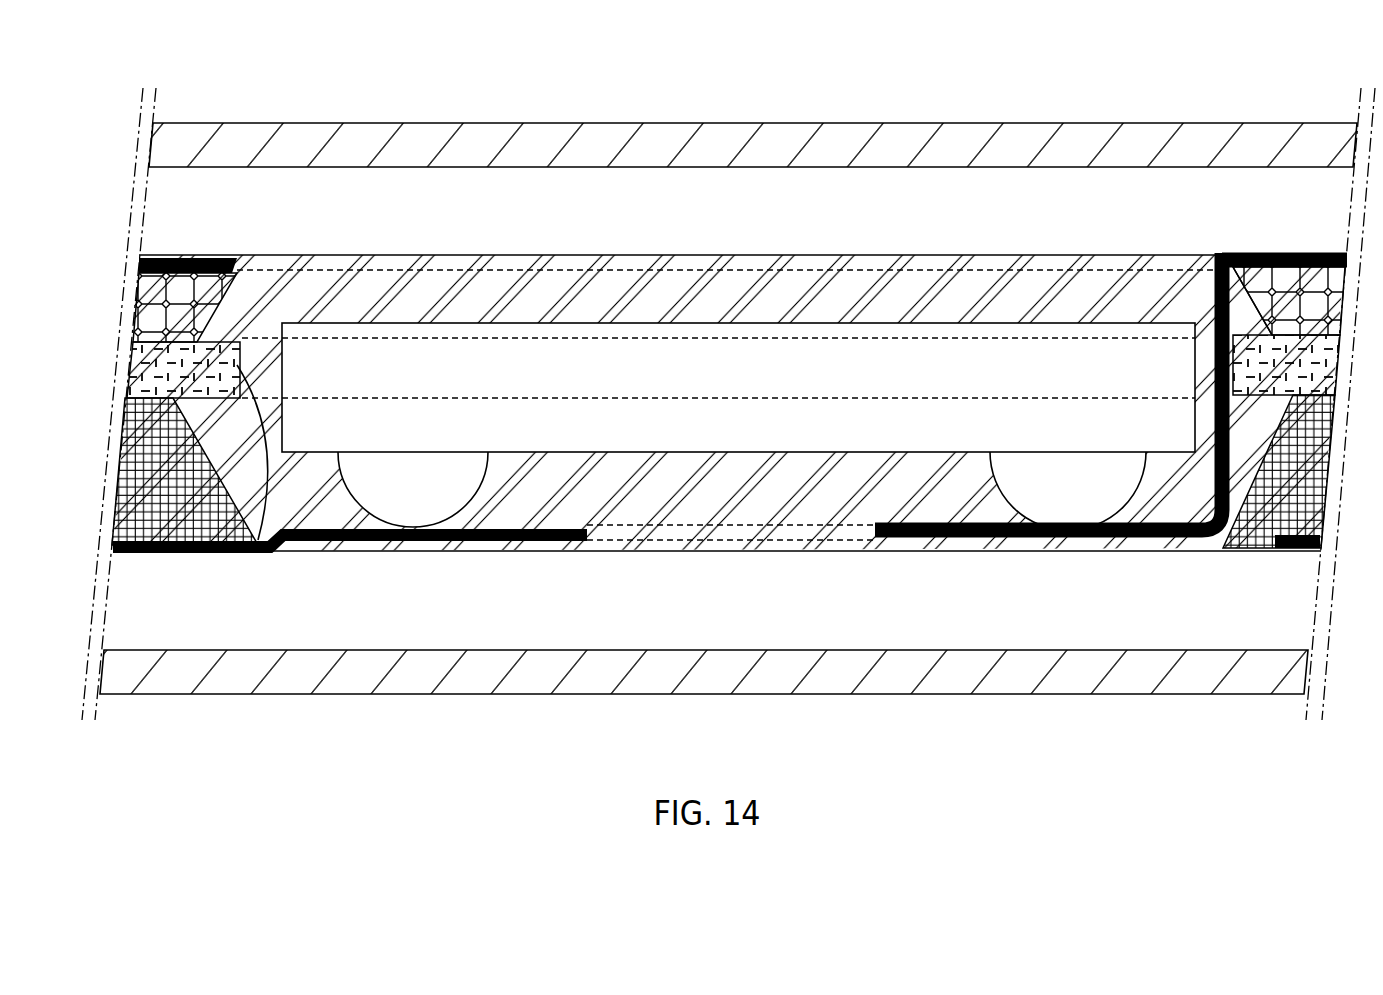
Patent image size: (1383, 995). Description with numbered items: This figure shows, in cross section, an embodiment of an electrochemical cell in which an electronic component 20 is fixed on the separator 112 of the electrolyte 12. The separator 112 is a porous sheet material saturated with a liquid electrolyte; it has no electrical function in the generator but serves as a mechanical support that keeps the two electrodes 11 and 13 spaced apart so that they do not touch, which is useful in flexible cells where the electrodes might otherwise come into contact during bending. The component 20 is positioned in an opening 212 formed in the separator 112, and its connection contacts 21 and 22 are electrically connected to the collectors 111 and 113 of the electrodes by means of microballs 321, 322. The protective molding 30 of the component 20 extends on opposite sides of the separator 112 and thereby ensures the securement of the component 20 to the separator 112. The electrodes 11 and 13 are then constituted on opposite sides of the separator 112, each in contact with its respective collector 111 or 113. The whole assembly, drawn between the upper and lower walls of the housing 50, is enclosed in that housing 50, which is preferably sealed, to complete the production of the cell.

The electrode 11 is at (1268, 253).
The electrolyte 12 is at (1313, 327).
The electrode 13 is at (1307, 502).
The electronic component 20 is at (770, 397).
The connection contact 21 is at (972, 540).
The connection contact 22 is at (366, 507).
The protective molding 30 is at (668, 528).
The housing 50 is at (1088, 127).
The collector 111 is at (1297, 353).
The separator 112 is at (1295, 253).
The collector 113 is at (1293, 550).
The opening 212 is at (255, 550).
The microballs 321 is at (1042, 492).
The microballs 322 is at (430, 478).